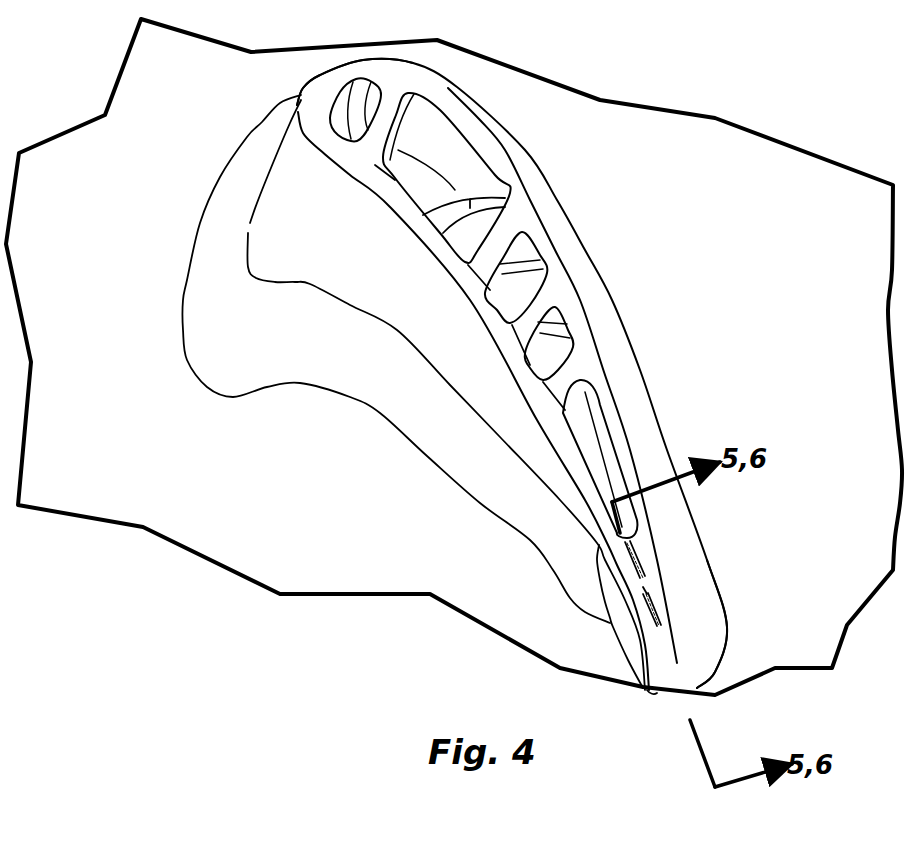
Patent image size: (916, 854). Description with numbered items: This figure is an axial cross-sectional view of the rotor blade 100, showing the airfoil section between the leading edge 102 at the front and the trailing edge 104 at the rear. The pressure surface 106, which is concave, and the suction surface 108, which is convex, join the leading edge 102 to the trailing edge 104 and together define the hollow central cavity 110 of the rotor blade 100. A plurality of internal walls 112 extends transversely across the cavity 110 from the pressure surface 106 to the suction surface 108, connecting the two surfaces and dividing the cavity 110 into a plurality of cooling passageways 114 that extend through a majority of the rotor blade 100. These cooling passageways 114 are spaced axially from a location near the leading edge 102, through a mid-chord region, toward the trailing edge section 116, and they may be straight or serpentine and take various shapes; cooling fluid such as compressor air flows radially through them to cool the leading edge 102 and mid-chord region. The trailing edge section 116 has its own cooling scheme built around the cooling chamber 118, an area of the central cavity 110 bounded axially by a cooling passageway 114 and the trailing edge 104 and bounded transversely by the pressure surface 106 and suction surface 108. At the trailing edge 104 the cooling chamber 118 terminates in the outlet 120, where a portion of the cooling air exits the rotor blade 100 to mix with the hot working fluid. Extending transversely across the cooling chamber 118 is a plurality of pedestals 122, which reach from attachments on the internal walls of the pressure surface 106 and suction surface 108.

The rotor blade 100 is at (628, 155).
The leading edge 102 is at (301, 94).
The trailing edge 104 is at (690, 690).
The pressure surface 106 is at (403, 292).
The suction surface 108 is at (560, 250).
The cavity 110 is at (447, 187).
The internal walls 112 is at (366, 158).
The cooling passageways 114 is at (355, 87).
The trailing edge section 116 is at (610, 623).
The cooling chamber 118 is at (643, 587).
The outlet 120 is at (677, 687).
The pedestals 122 is at (633, 550).